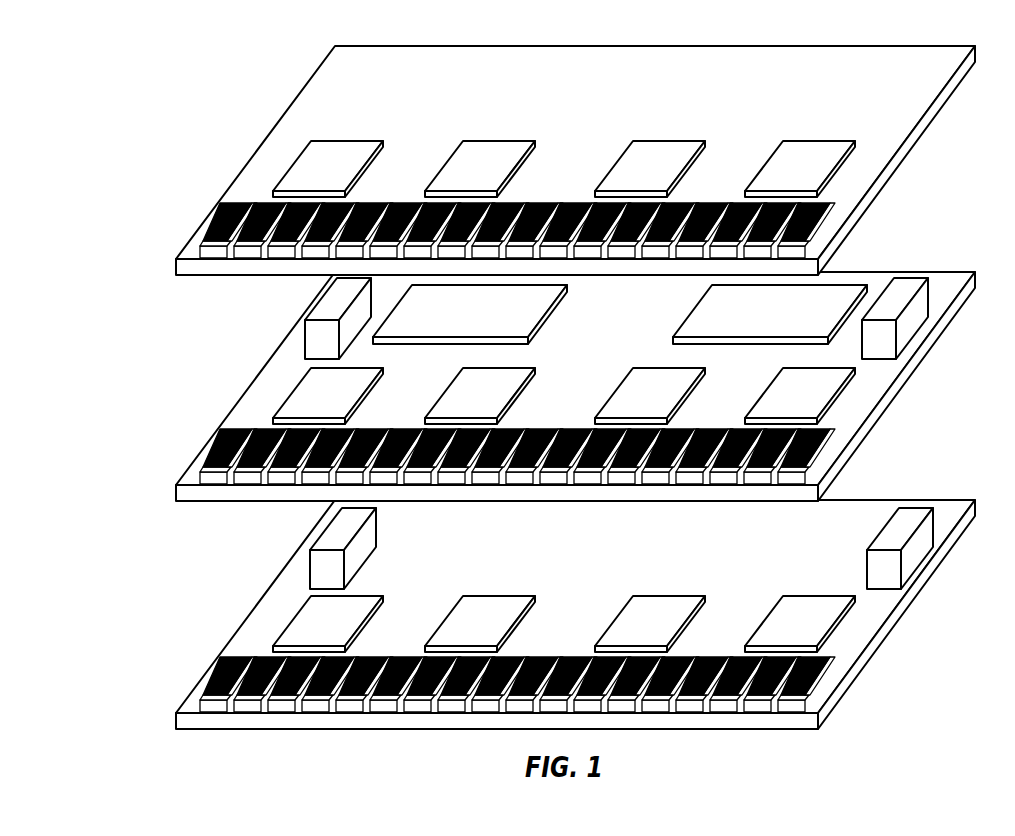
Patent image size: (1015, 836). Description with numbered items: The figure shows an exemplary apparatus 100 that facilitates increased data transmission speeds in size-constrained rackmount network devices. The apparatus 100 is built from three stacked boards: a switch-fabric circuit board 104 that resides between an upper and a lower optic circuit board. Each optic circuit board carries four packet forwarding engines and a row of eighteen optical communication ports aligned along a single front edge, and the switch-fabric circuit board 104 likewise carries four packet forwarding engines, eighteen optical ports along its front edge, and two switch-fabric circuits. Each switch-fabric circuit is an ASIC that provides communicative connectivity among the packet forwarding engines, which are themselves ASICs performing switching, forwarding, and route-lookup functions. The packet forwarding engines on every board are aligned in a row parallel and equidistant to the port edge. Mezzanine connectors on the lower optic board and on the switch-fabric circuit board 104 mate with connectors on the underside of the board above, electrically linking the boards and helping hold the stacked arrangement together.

The apparatus 100 is at (86, 84).
The switch-fabric circuit board 104 is at (258, 377).